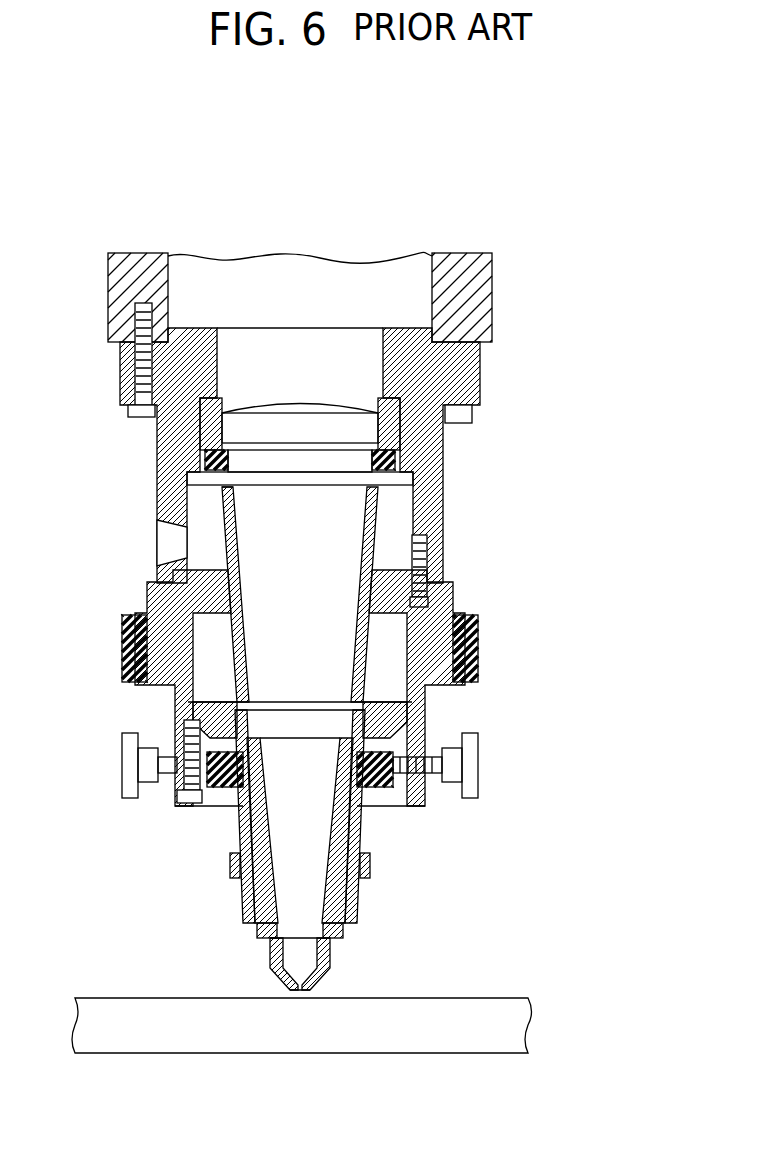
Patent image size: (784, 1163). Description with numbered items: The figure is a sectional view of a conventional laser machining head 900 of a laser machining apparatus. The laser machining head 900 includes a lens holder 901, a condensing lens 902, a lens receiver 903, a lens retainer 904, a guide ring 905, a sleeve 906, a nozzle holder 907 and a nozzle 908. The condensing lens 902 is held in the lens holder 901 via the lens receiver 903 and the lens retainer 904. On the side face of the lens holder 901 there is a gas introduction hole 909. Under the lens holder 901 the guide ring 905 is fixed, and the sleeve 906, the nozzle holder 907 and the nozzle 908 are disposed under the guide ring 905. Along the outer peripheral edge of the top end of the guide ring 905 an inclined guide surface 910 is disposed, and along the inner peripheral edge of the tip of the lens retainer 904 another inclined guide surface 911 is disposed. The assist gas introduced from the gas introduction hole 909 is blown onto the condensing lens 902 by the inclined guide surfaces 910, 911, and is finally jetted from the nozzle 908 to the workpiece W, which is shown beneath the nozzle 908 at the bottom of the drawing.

The laser machining head 900 is at (329, 584).
The lens holder 901 is at (430, 443).
The condensing lens 902 is at (293, 398).
The lens receiver 903 is at (203, 398).
The lens retainer 904 is at (203, 457).
The guide ring 905 is at (380, 540).
The sleeve 906 is at (122, 672).
The nozzle holder 907 is at (240, 893).
The nozzle 908 is at (273, 960).
The gas introduction hole 909 is at (157, 548).
The inclined guide surface 910 is at (223, 493).
The inclined guide surface 911 is at (230, 470).
The workpiece W is at (473, 1005).